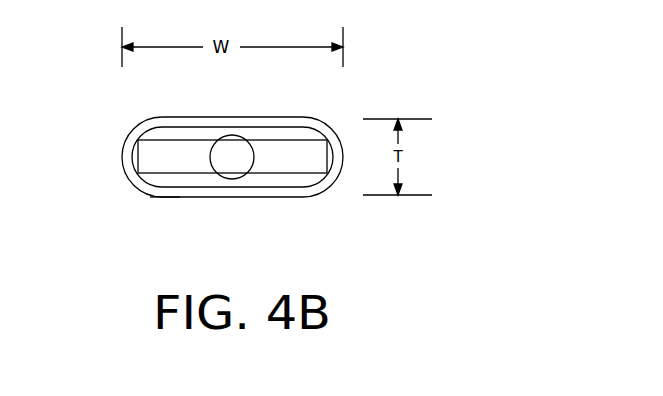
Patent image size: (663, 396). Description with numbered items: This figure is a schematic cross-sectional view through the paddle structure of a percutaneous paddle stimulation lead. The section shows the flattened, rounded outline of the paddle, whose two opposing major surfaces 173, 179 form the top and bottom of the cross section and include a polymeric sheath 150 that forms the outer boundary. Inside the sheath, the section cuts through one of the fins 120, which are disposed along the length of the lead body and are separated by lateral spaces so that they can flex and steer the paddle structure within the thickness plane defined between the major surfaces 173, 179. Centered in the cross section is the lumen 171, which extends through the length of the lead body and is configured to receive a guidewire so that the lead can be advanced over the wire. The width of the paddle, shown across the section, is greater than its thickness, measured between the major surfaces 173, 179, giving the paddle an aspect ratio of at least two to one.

The polymeric sheath 150 is at (148, 118).
The major surface 173 is at (212, 118).
The fins 120 is at (147, 151).
The lumen 171 is at (232, 180).
The major surface 179 is at (157, 198).